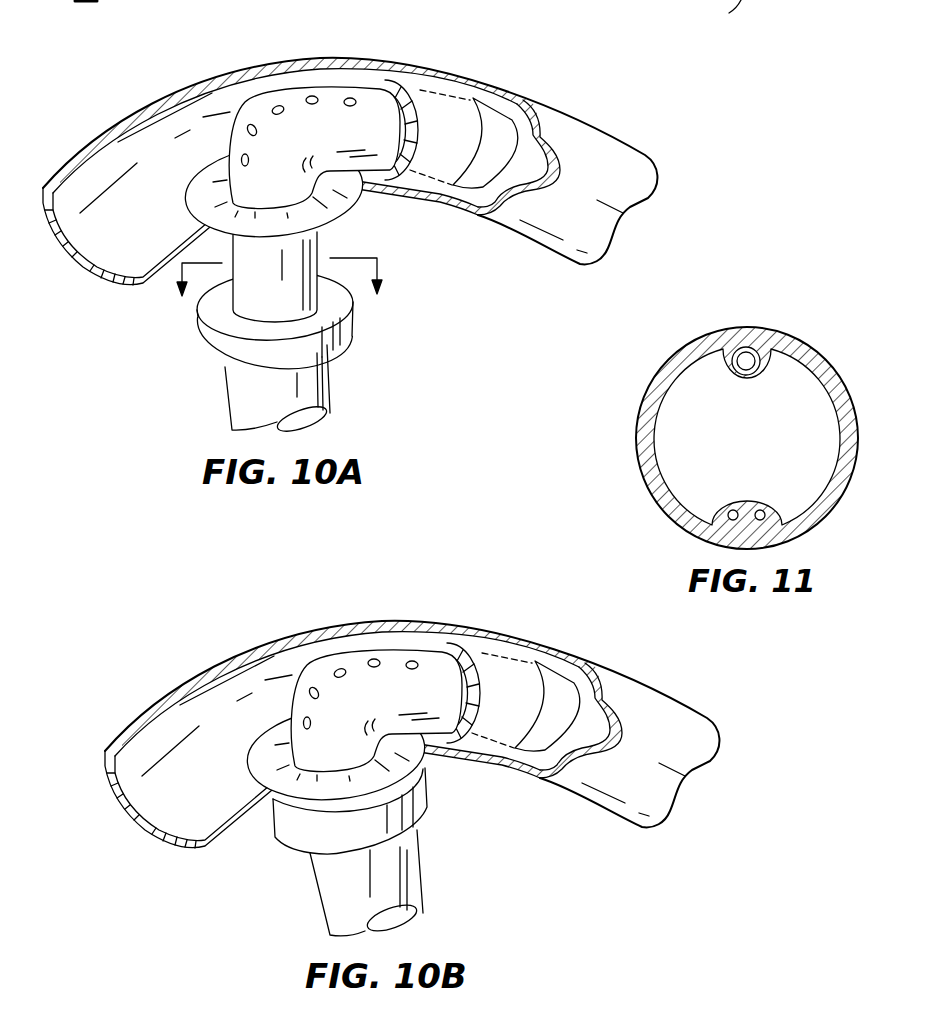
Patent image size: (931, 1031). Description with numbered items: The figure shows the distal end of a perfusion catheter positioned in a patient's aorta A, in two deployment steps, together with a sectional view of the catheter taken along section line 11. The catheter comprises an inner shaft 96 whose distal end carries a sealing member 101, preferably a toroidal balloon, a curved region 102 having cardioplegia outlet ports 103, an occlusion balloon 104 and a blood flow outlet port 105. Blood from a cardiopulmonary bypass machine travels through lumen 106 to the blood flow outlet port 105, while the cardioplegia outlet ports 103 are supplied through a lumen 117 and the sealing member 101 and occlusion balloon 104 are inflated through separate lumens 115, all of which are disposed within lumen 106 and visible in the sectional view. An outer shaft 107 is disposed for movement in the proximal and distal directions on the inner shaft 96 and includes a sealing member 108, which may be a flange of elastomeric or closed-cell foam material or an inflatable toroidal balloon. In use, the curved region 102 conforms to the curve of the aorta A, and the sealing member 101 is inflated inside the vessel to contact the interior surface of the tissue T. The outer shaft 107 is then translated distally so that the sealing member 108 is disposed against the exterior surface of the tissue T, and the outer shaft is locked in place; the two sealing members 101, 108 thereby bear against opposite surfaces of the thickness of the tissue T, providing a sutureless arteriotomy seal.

In FIG. 10A, the inner shaft 96 is at (277, 297).
In FIG. 11, the inner shaft 96 is at (697, 342).
In FIG. 10A, the sealing member 101 is at (193, 195).
In FIG. 10B, the sealing member 101 is at (292, 754).
In FIG. 10A, the curved region 102 is at (263, 97).
In FIG. 10B, the curved region 102 is at (339, 685).
In FIG. 10A, the cardioplegia outlet ports 103 is at (278, 106).
In FIG. 10B, the cardioplegia outlet ports 103 is at (361, 651).
In FIG. 10A, the occlusion balloon 104 is at (437, 90).
In FIG. 10B, the occlusion balloon 104 is at (513, 677).
In FIG. 10A, the blood flow outlet port 105 is at (519, 101).
In FIG. 10B, the blood flow outlet port 105 is at (597, 703).
In FIG. 11, the lumen 106 is at (660, 418).
In FIG. 10A, the outer shaft 107 is at (310, 390).
In FIG. 10B, the outer shaft 107 is at (393, 882).
In FIG. 10A, the sealing member 108 is at (350, 326).
In FIG. 10B, the sealing member 108 is at (287, 827).
In FIG. 11, the lumens 115 is at (760, 508).
In FIG. 11, the lumen 117 is at (748, 356).
In FIG. 10A, the section line of FIG. 11 is at (282, 291).
In FIG. 10A, the aorta A is at (603, 140).
In FIG. 10B, the aorta A is at (412, 734).
In FIG. 10A, the tissue T is at (403, 200).
In FIG. 10B, the tissue T is at (484, 794).